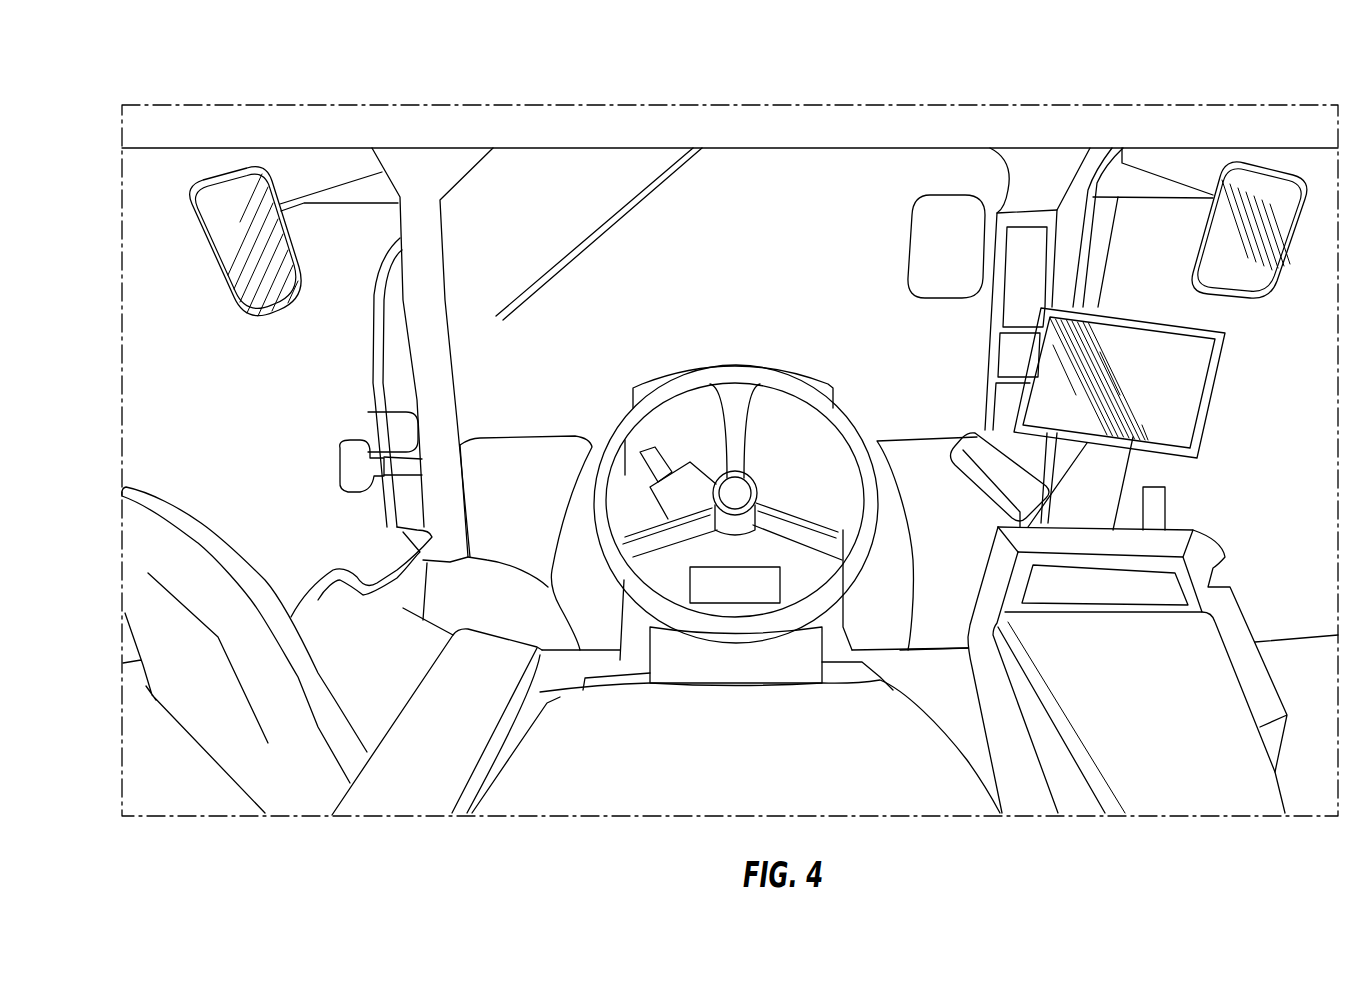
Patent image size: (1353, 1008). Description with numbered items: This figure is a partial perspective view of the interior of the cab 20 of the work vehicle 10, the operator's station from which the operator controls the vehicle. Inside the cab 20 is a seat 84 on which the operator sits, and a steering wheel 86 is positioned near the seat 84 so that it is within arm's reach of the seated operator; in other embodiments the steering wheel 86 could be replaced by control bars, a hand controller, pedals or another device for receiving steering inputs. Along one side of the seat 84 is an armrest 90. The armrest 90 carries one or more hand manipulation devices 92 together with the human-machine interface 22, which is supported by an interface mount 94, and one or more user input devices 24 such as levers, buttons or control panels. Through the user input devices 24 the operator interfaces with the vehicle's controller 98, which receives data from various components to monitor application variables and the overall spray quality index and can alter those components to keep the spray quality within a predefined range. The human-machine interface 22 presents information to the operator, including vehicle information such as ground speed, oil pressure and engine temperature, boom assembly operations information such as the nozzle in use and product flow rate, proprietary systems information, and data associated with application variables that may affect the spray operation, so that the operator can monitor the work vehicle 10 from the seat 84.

The work vehicle 10 is at (955, 77).
The cab 20 is at (98, 284).
The human-machine interface (HMI) 22 is at (1218, 448).
The user input devices 24 is at (1152, 592).
The seat 84 is at (622, 778).
The steering wheel 86 is at (622, 432).
The armrest 90 is at (1153, 659).
The hand manipulation devices 92 is at (978, 435).
The interface mount 94 is at (1105, 478).
The controller 98 is at (893, 676).